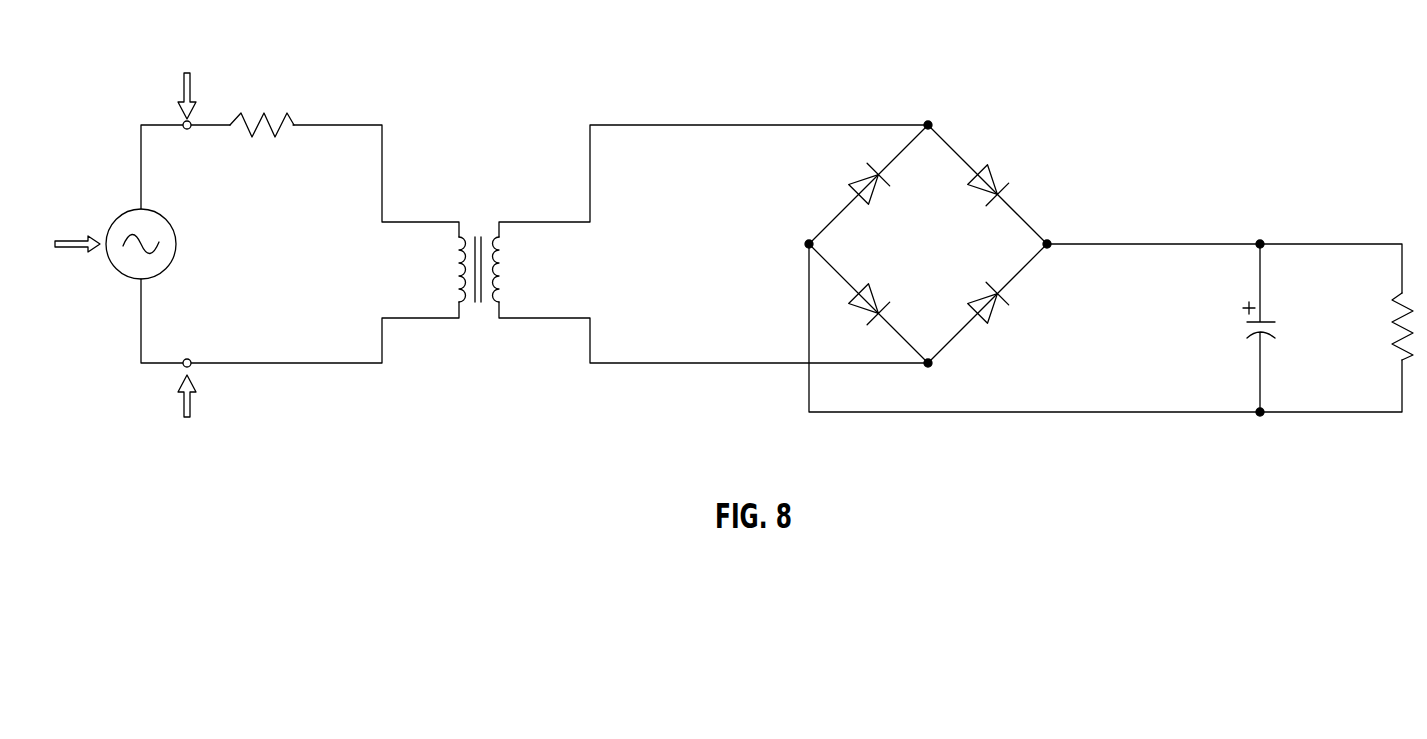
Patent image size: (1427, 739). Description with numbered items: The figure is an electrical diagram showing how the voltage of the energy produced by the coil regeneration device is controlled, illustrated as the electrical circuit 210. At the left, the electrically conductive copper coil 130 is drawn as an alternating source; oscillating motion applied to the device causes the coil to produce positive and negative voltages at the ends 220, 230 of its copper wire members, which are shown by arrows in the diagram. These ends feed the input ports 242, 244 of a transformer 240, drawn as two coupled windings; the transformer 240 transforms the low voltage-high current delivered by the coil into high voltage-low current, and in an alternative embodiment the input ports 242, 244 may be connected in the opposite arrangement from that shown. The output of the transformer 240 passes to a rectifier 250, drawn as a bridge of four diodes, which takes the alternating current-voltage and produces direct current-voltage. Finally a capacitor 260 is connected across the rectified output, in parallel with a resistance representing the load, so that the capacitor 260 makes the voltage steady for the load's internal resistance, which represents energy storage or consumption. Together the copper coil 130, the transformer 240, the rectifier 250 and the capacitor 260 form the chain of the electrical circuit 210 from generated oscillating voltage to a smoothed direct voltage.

The copper coil 130 is at (72, 240).
The electrical circuit 210 is at (354, 42).
The end of copper wire member 220 is at (190, 85).
The end of copper wire member 230 is at (190, 400).
The transformer 240 is at (484, 190).
The input port 242 is at (183, 118).
The input port 244 is at (183, 379).
The rectifier 250 is at (924, 104).
The capacitor 260 is at (1259, 222).